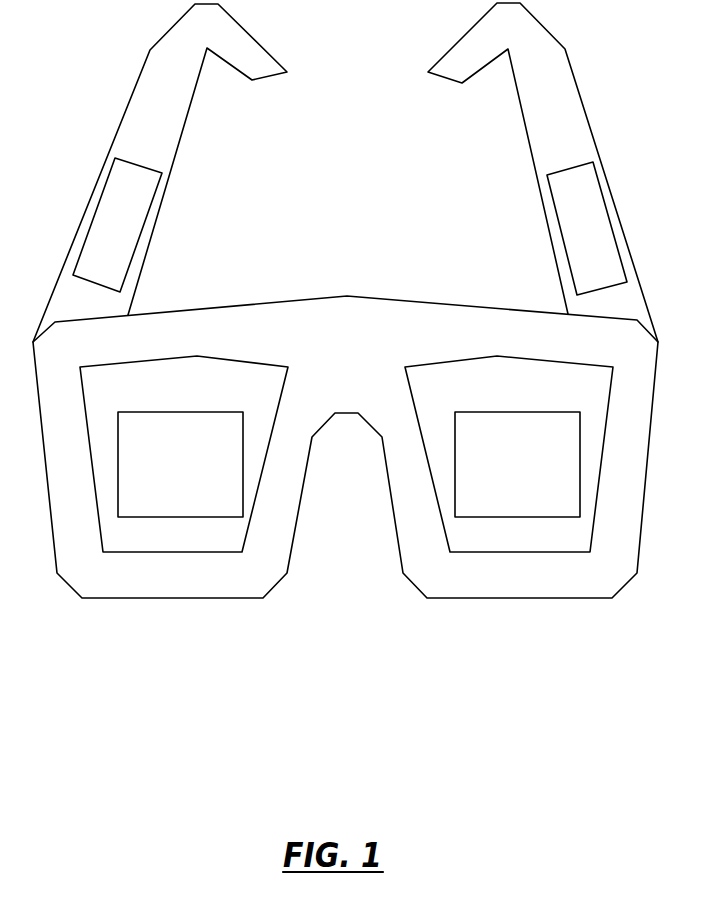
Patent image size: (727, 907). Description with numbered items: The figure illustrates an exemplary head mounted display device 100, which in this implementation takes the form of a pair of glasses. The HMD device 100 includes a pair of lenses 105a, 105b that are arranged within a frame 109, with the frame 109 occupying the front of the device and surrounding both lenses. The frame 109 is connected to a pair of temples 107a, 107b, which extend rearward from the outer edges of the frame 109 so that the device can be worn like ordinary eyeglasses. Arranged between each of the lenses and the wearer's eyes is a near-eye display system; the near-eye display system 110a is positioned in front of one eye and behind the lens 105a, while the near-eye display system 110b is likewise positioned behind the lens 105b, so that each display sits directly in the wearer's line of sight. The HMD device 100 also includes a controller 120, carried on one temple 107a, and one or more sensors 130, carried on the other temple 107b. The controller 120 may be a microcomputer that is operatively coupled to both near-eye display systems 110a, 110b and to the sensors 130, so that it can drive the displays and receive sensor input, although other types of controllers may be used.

The head mounted display device 100 is at (345, 372).
The lens 105a is at (184, 454).
The lens 105b is at (509, 454).
The temple 107a is at (160, 173).
The temple 107b is at (543, 172).
The frame 109 is at (345, 447).
The near-eye display system 110a is at (180, 464).
The near-eye display system 110b is at (517, 464).
The controller 120 is at (117, 225).
The sensors 130 is at (587, 228).